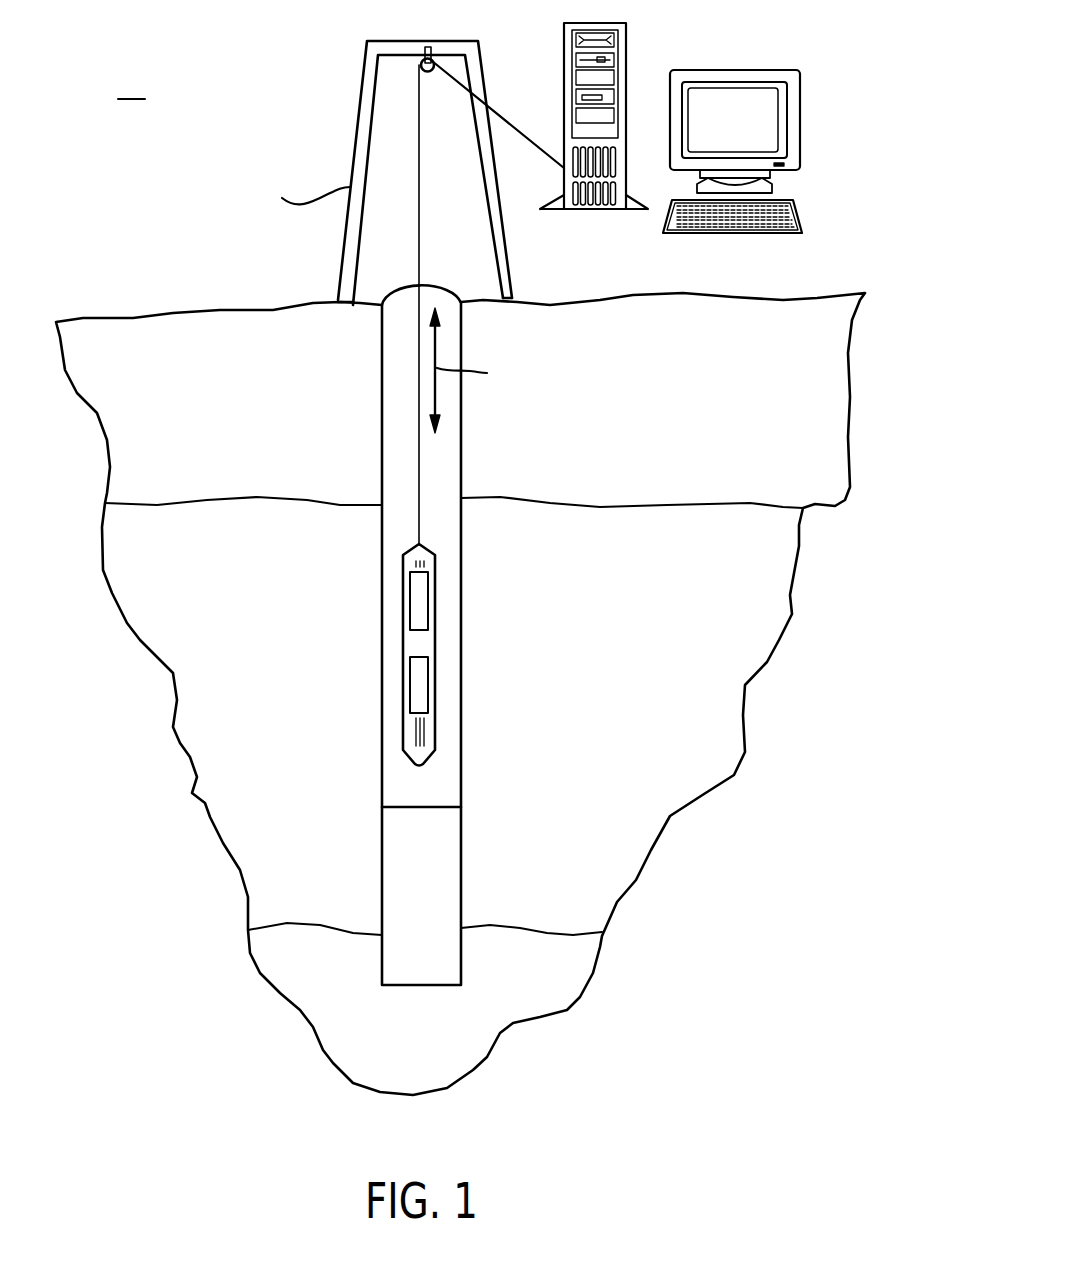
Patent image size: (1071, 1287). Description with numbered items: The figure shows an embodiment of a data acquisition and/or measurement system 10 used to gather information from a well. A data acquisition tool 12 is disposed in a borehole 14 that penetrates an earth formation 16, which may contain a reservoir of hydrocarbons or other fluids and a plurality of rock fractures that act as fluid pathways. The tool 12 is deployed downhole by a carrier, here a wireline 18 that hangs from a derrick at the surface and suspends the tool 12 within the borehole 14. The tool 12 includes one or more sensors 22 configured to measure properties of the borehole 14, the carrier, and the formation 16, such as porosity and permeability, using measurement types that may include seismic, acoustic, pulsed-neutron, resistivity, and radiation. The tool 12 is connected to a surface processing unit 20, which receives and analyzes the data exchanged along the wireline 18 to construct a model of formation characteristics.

The data acquisition and/or measurement system 10 is at (460, 568).
The data acquisition tool 12 is at (432, 553).
The borehole 14 is at (381, 338).
The formation 16 is at (454, 534).
The wireline 18 is at (419, 445).
The surface processing unit 20 is at (565, 56).
The sensors 22 is at (410, 615).